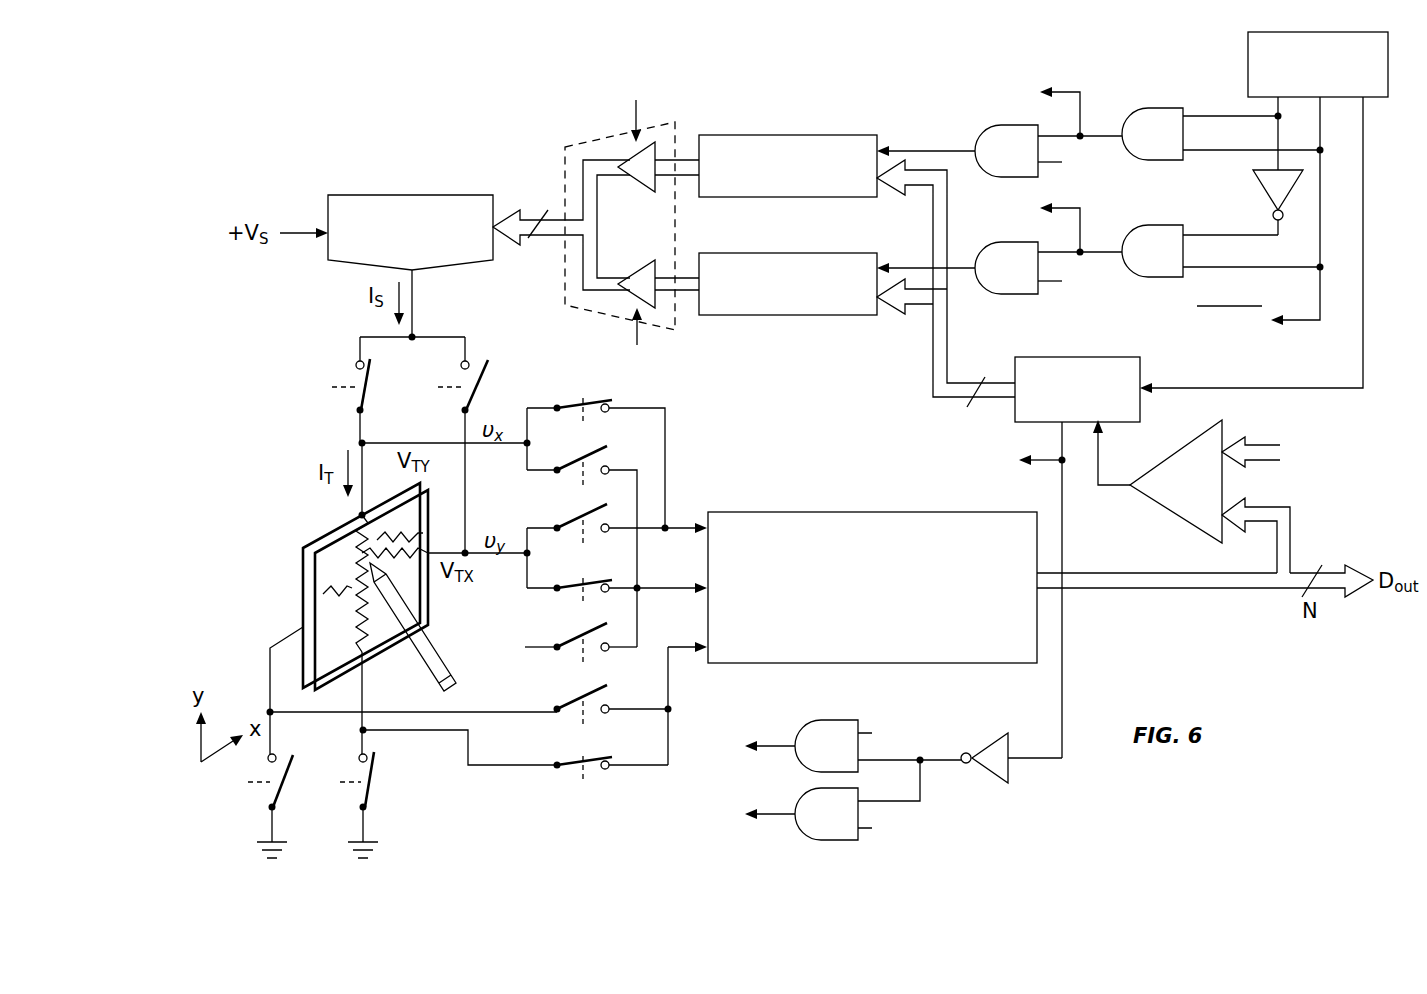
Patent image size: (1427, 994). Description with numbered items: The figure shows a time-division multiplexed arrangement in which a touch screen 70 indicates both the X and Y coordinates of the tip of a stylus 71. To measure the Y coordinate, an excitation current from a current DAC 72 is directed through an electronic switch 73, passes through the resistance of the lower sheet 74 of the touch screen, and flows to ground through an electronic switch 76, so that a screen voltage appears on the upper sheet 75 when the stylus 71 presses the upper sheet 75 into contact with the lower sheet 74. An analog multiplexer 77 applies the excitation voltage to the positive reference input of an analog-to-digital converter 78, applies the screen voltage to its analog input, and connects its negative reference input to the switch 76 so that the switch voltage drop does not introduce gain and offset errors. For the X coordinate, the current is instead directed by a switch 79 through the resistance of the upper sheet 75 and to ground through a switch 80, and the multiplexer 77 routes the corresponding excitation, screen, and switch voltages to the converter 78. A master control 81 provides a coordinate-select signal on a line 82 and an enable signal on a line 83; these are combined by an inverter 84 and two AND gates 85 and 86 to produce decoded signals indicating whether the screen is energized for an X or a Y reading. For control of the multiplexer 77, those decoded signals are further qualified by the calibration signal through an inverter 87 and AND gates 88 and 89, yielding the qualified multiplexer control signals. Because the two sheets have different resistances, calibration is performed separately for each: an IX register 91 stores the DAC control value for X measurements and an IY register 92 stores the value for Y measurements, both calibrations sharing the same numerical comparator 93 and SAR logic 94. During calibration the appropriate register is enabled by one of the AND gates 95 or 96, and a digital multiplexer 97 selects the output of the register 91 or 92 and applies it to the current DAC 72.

The touch screen 70 is at (325, 586).
The stylus 71 is at (430, 660).
The current DAC 72 is at (394, 195).
The electronic switch 73 is at (357, 403).
The lower sheet 74 is at (302, 565).
The upper sheet 75 is at (314, 593).
The electronic switch 76 is at (372, 800).
The analog multiplexer 77 is at (762, 452).
The analog-to-digital converter 78 is at (790, 512).
The switch 79 is at (461, 403).
The switch 80 is at (281, 800).
The master control 81 is at (1247, 62).
The line 82 is at (1276, 136).
The line 83 is at (1318, 252).
The inverter 84 is at (1256, 189).
The AND gate 85 is at (1160, 108).
The AND gate 86 is at (1162, 225).
The inverter 87 is at (1000, 781).
The AND gate 88 is at (797, 724).
The AND gate 89 is at (797, 792).
The IX register 91 is at (805, 135).
The IY register 92 is at (810, 253).
The numerical comparator 93 is at (1185, 520).
The SAR logic 94 is at (1068, 357).
The AND gate 95 is at (986, 125).
The AND gate 96 is at (986, 242).
The digital multiplexer 97 is at (553, 163).